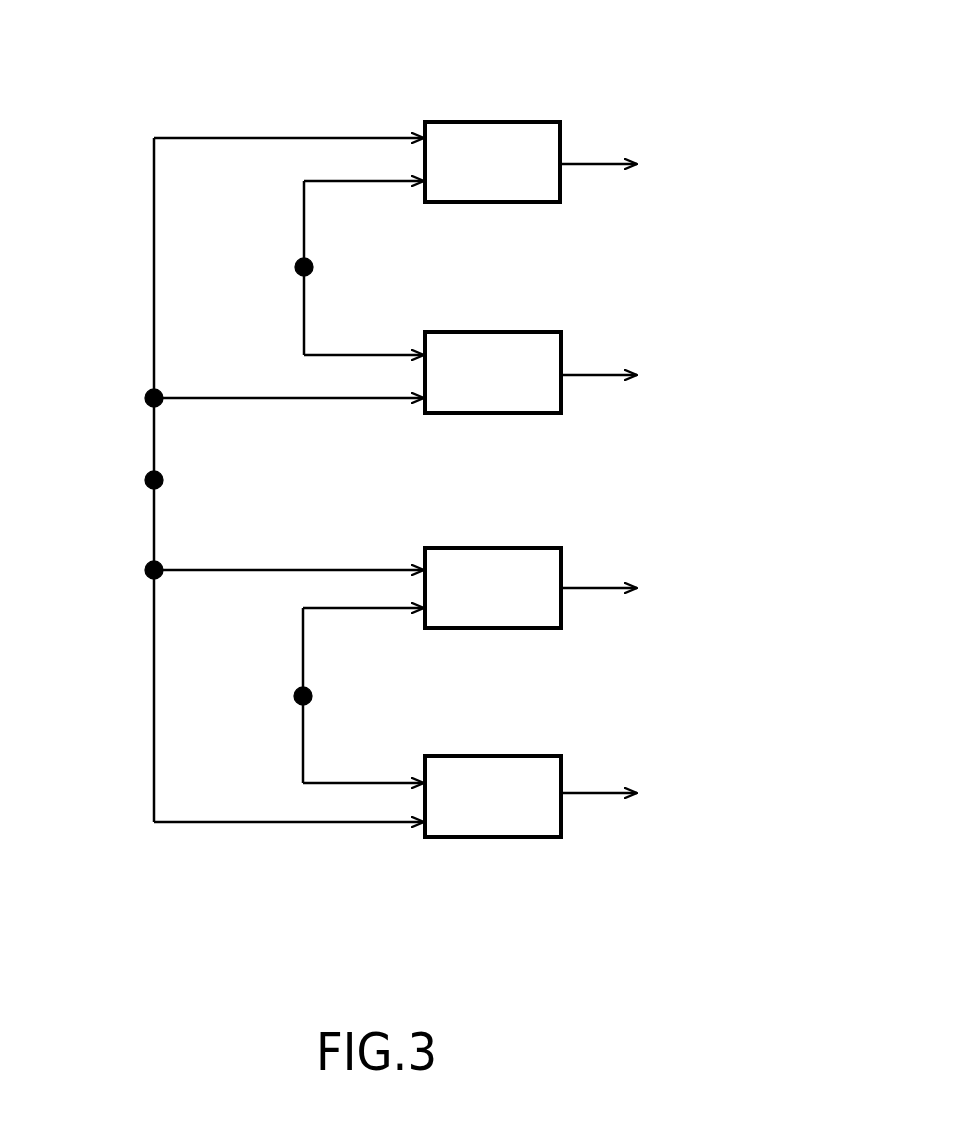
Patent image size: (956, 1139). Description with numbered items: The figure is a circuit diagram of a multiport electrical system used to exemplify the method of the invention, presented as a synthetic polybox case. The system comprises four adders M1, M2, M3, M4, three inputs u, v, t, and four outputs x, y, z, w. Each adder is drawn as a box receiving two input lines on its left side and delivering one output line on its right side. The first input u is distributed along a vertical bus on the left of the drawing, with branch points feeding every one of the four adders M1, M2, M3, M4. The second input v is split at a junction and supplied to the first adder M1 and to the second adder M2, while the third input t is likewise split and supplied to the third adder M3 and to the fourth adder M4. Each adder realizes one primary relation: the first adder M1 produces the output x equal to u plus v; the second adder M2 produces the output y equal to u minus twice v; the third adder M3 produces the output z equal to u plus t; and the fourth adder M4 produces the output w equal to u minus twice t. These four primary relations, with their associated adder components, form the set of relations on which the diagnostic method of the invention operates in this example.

The adder M1 is at (532, 128).
The adder M2 is at (523, 338).
The adder M3 is at (518, 557).
The adder M4 is at (500, 767).
The input u is at (154, 480).
The input v is at (304, 267).
The input t is at (303, 696).
The output x is at (599, 145).
The output y is at (599, 355).
The output z is at (599, 570).
The output w is at (599, 775).